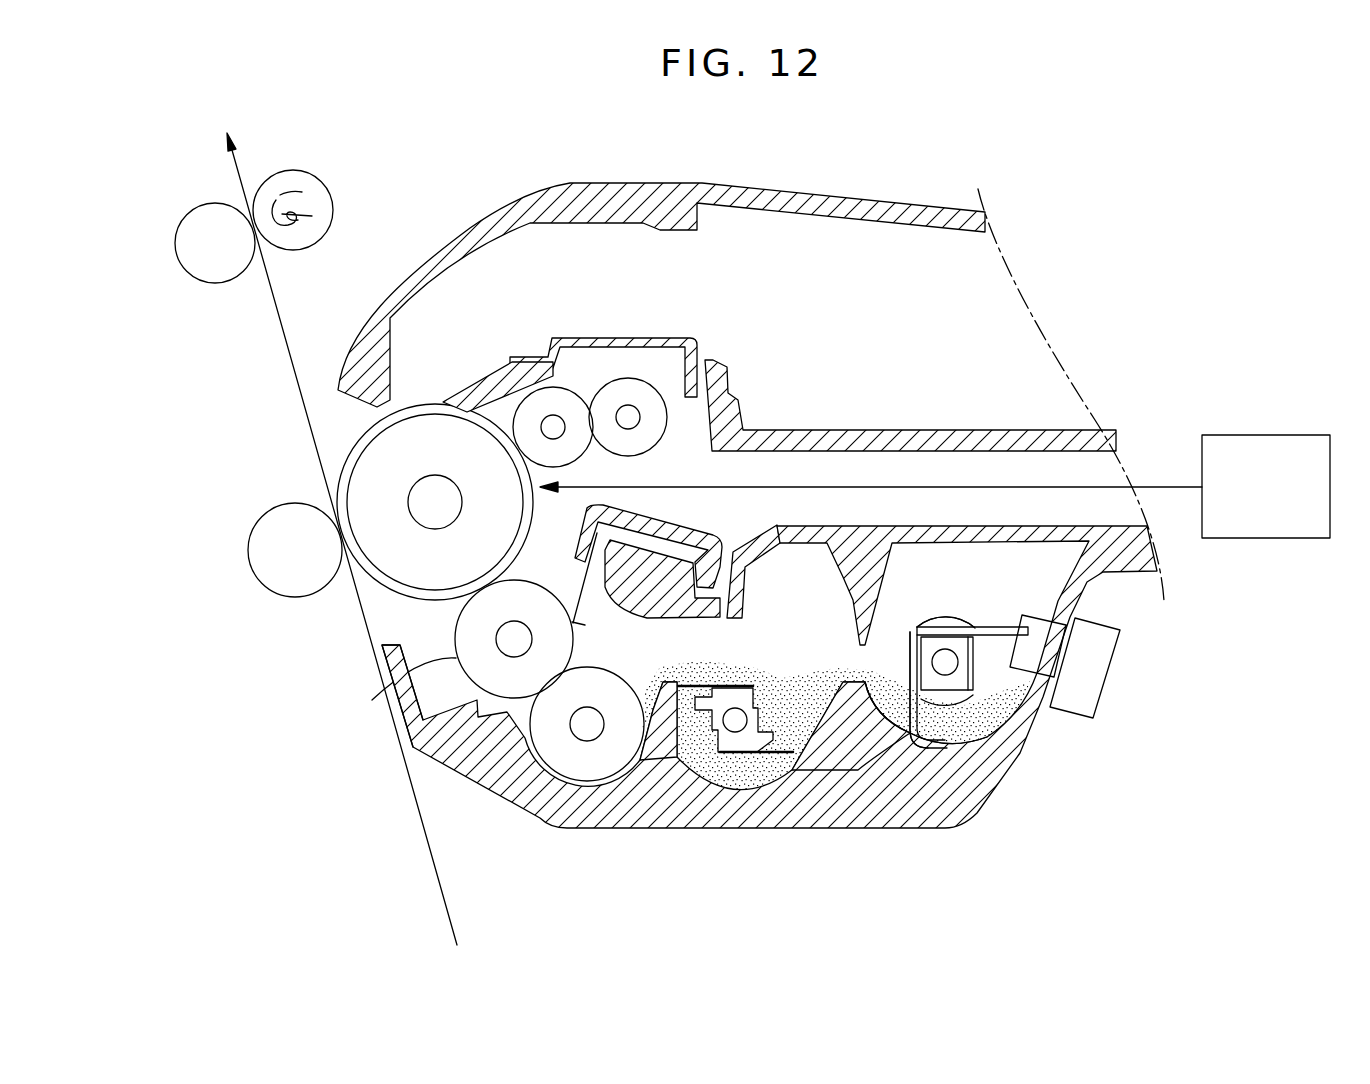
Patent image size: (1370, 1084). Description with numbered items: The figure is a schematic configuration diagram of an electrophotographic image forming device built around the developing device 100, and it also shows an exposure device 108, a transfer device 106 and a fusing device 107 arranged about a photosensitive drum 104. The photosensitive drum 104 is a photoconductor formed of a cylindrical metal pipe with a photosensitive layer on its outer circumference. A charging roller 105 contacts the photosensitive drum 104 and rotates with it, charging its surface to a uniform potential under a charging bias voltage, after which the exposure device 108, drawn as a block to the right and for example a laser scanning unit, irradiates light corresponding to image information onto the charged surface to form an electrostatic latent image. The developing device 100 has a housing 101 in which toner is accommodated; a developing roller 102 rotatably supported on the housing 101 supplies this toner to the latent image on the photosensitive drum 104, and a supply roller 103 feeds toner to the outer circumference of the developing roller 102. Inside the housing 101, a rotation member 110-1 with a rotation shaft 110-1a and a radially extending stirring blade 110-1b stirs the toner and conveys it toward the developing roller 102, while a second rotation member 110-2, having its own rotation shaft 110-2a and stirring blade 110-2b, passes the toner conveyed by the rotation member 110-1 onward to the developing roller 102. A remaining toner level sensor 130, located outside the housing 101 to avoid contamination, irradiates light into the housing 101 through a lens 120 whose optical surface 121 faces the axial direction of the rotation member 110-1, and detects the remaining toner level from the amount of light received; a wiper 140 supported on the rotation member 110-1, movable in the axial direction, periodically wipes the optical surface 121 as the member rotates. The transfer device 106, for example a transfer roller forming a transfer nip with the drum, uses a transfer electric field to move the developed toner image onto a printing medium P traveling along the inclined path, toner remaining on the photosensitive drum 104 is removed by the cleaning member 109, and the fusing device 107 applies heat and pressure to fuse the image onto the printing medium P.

The developing device 100 is at (1080, 236).
The housing 101 is at (922, 829).
The developing roller 102 is at (397, 693).
The supply roller 103 is at (560, 762).
The photosensitive drum 104 is at (373, 573).
The charging roller 105 is at (563, 398).
The transfer device 106 is at (258, 527).
The fusing device 107 is at (286, 156).
The exposure device 108 is at (1267, 538).
The cleaning member 109 is at (490, 373).
The rotation member 110-1 is at (965, 705).
The rotation shaft 110-1a is at (910, 665).
The stirring blade 110-1b is at (880, 715).
The rotation member 110-2 is at (732, 720).
The rotation shaft 110-2a is at (678, 745).
The stirring blade 110-2b is at (777, 745).
The lens 120 is at (1027, 684).
The optical surface 121 is at (1040, 623).
The remaining toner level sensor 130 is at (1128, 676).
The wiper 140 is at (992, 630).
The printing medium P is at (412, 797).